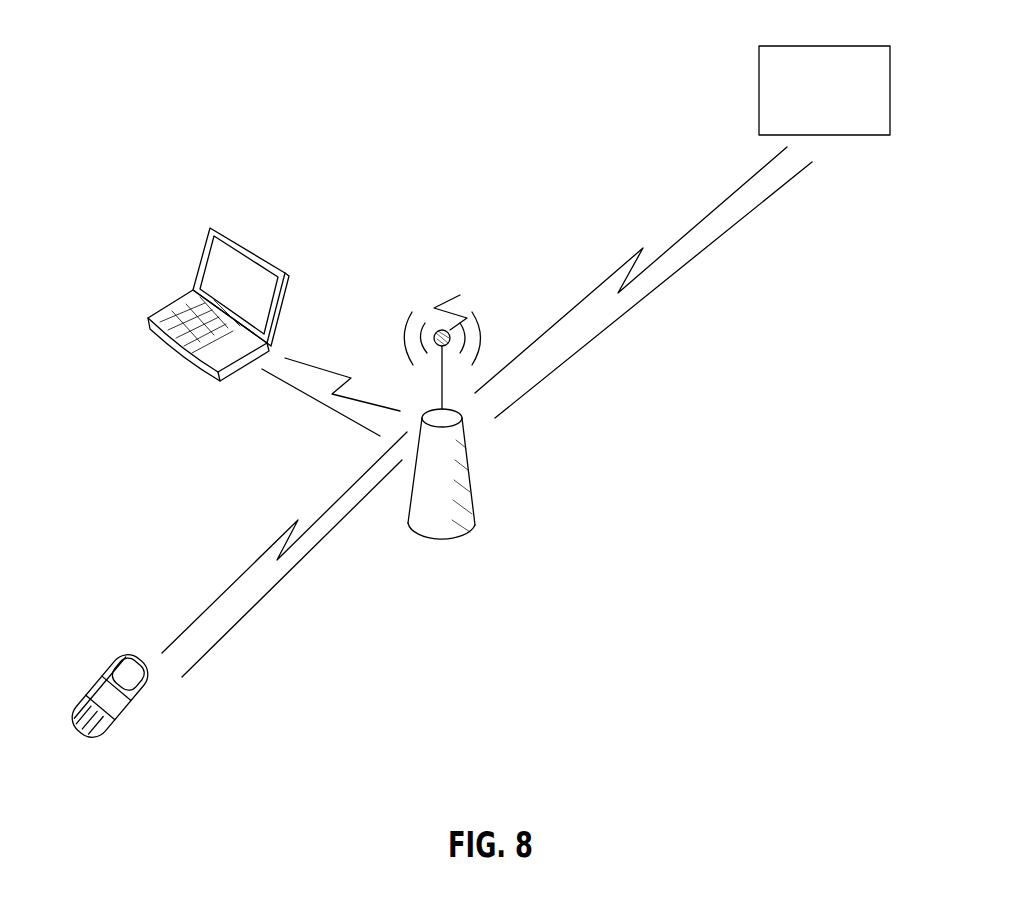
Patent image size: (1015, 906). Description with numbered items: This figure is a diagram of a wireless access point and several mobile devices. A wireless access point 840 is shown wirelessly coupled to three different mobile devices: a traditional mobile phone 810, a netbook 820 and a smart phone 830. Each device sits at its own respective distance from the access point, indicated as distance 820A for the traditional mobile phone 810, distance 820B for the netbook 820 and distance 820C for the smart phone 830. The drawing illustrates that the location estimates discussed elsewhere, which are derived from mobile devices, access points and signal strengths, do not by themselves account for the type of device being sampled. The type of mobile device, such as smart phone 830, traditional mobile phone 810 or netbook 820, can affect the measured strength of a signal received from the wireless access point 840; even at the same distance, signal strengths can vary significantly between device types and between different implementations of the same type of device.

The traditional mobile phone 810 is at (165, 715).
The netbook 820 is at (247, 240).
The distance 820A is at (278, 585).
The distance 820B is at (312, 398).
The distance 820C is at (668, 277).
The smart phone 830 is at (900, 100).
The wireless access point 840 is at (464, 417).